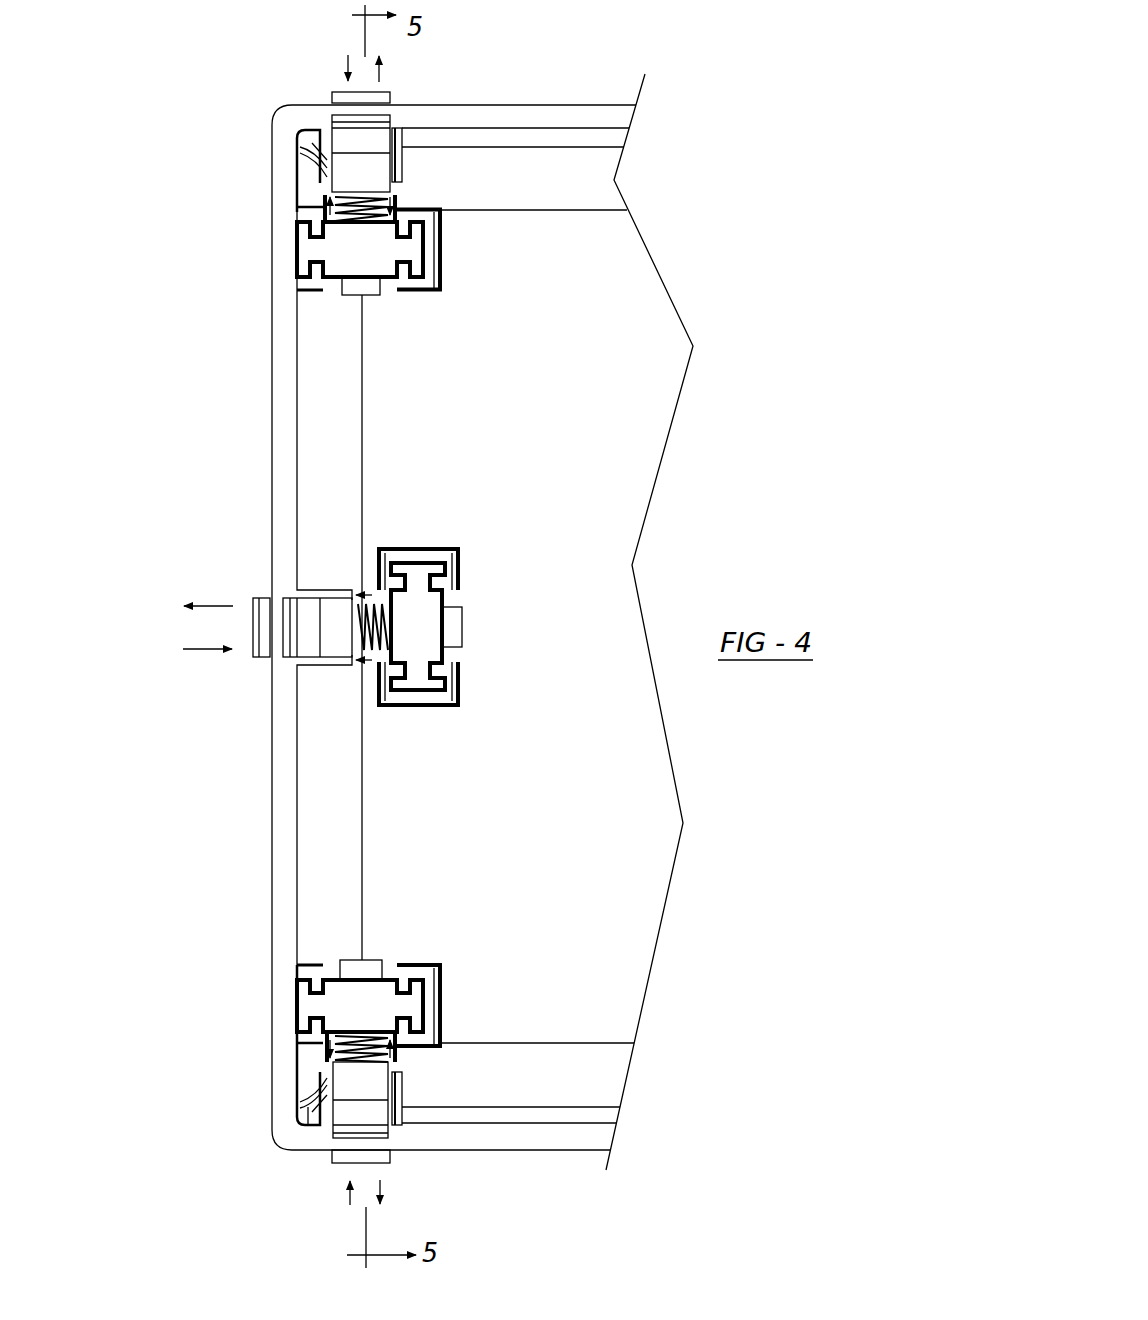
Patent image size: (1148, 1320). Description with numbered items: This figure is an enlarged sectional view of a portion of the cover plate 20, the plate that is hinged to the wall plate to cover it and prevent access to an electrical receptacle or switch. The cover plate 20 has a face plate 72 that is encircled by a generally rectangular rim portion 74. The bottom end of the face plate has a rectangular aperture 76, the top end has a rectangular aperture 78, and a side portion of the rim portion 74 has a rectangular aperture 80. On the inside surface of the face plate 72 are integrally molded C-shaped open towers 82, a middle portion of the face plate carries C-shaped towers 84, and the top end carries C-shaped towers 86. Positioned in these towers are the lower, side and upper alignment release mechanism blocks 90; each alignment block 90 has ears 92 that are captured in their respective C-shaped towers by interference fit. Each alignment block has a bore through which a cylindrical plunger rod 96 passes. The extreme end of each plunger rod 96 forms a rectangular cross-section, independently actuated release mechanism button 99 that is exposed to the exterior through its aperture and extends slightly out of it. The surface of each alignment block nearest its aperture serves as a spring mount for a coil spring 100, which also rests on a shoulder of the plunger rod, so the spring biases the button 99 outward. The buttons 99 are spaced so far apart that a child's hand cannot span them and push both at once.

The cover plate 20 is at (530, 82).
The face plate 72 is at (643, 527).
The rim portion 74 is at (500, 1092).
The rectangular aperture 76 is at (390, 1150).
The rectangular aperture 78 is at (390, 97).
The rectangular aperture 80 is at (270, 598).
The C-shaped open towers 82 is at (313, 973).
The C-shaped towers 84 is at (448, 562).
The C-shaped towers 86 is at (313, 293).
The alignment release mechanism block 90 is at (423, 647).
The ears 92 is at (296, 255).
The plunger rod 96 is at (380, 296).
The release mechanism button 99 is at (340, 90).
The coil spring 100 is at (322, 162).